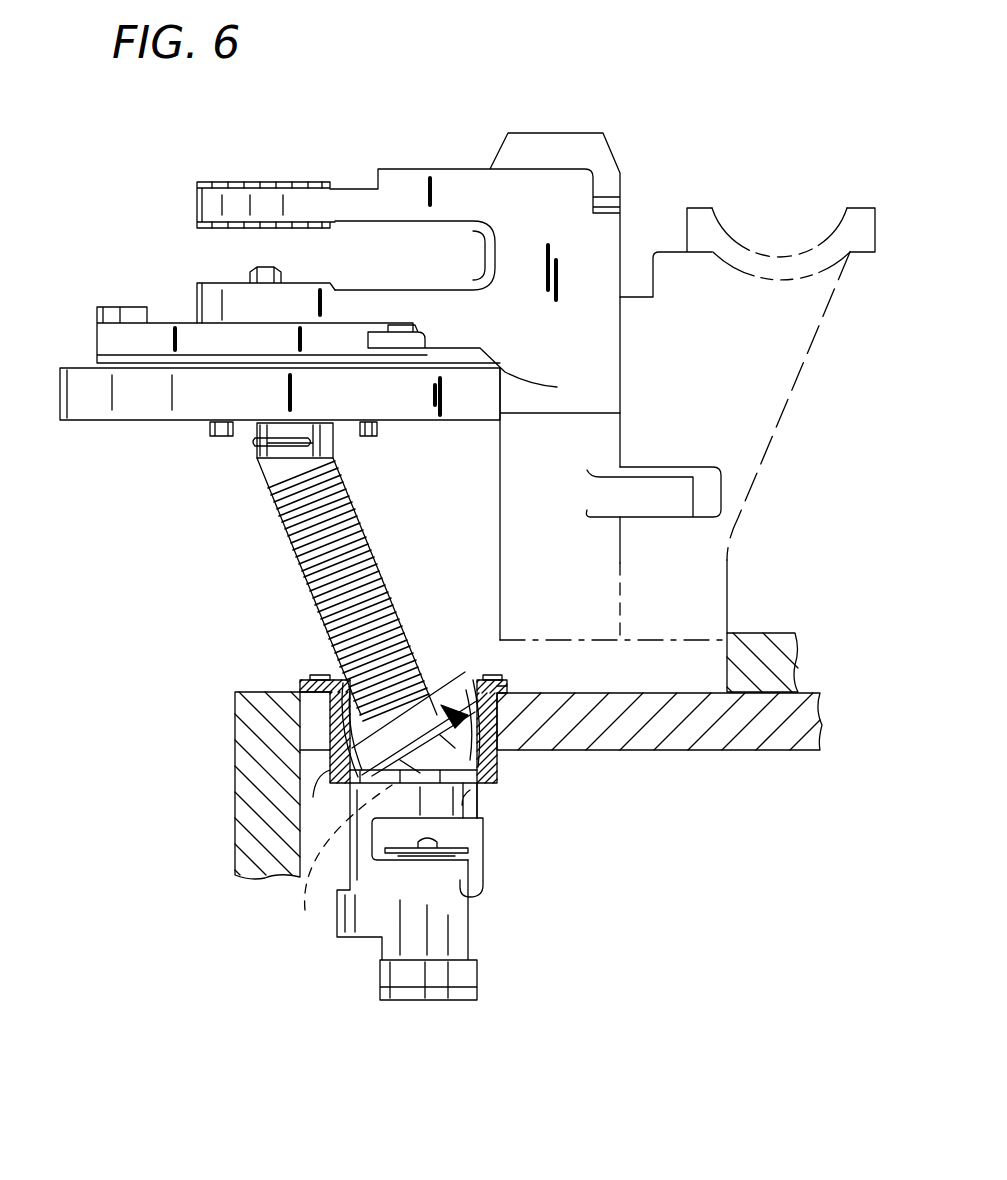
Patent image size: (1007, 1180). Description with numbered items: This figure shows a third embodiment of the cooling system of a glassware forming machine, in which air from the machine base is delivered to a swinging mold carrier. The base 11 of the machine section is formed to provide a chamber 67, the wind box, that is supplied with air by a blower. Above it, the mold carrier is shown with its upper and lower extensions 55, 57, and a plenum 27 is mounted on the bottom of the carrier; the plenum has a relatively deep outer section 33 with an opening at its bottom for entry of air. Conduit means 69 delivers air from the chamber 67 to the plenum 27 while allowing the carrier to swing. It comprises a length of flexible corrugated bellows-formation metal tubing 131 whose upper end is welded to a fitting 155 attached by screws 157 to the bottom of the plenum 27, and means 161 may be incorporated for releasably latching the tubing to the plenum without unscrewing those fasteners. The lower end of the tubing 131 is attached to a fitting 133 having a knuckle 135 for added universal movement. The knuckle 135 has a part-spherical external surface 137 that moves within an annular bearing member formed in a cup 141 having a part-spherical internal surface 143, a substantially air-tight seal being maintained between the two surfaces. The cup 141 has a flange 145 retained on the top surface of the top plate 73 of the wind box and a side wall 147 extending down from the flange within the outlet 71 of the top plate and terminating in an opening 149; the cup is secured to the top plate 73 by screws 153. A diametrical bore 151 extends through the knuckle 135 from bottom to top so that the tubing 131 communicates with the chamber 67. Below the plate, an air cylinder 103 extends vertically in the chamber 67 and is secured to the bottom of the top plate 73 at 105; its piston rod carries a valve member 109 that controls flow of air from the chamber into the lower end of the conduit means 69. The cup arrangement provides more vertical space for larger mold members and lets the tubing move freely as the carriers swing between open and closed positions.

The base 11 is at (236, 801).
The plenum 27 is at (452, 428).
The outer section 33 is at (57, 384).
The upper extension 55 is at (197, 204).
The lower extension 57 is at (197, 287).
The chamber 67 is at (696, 847).
The conduit means 69 is at (253, 523).
The outlet 71 is at (324, 797).
The top plate 73 is at (300, 682).
The air cylinder 103 is at (468, 932).
The securement of cylinder to plate 105 is at (483, 818).
The valve member 109 is at (462, 850).
The flexible corrugated bellows-formation metal tubing 131 is at (292, 556).
The fitting 133 is at (432, 680).
The knuckle 135 is at (470, 683).
The part-spherical external surface 137 is at (505, 686).
The cup 141 is at (497, 722).
The part-spherical internal surface 143 is at (498, 776).
The flange 145 is at (312, 682).
The side wall 147 is at (345, 728).
The opening 149 is at (480, 810).
The bore 151 is at (323, 859).
The screws 153 is at (318, 675).
The fitting 155 is at (333, 452).
The screws 157 is at (220, 438).
The means for releasably latching 161 is at (247, 445).